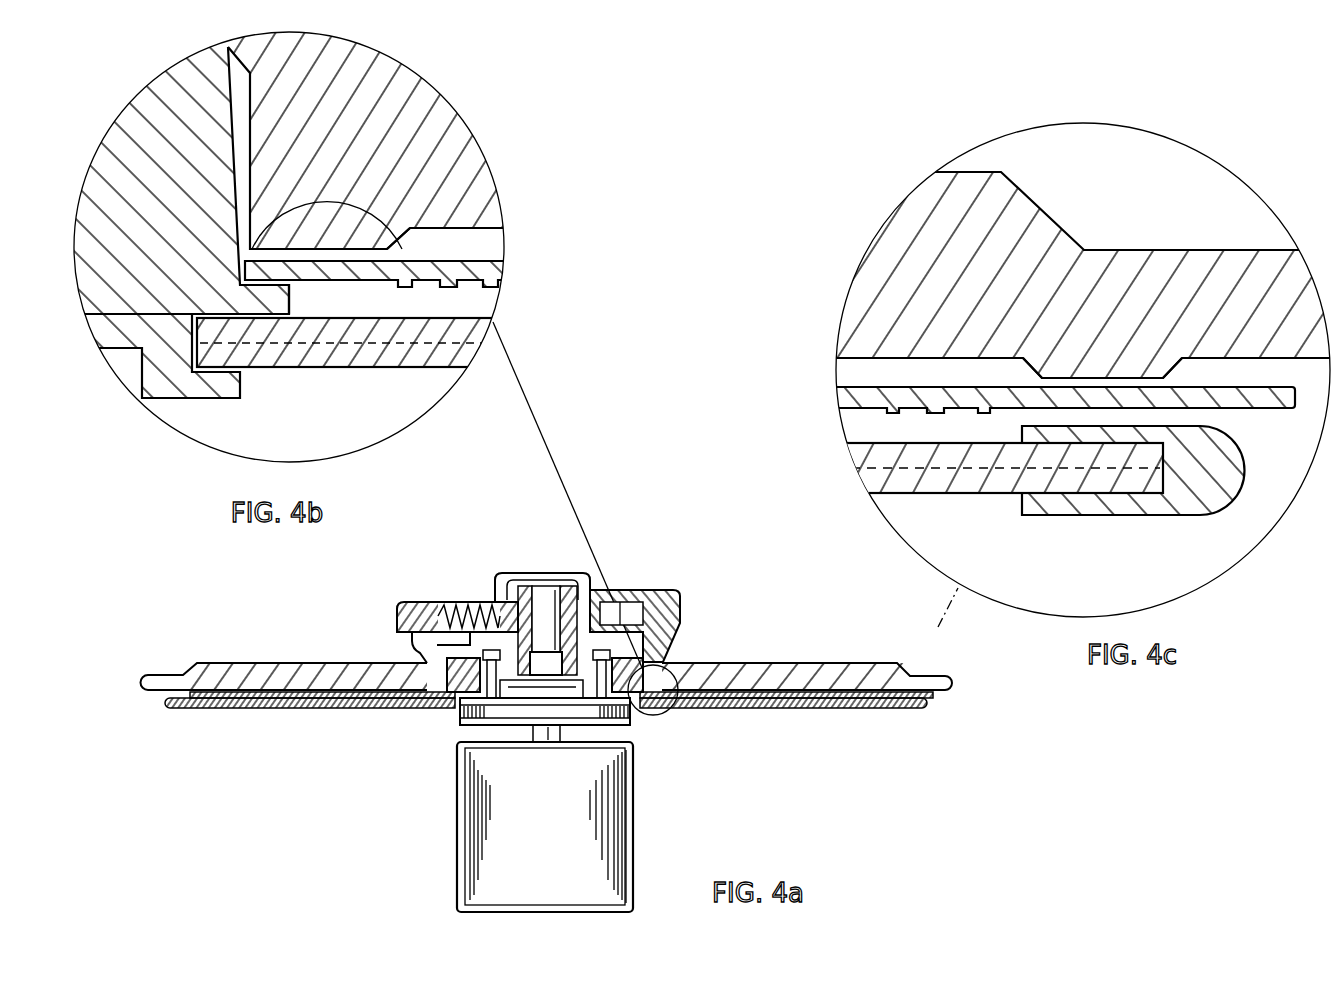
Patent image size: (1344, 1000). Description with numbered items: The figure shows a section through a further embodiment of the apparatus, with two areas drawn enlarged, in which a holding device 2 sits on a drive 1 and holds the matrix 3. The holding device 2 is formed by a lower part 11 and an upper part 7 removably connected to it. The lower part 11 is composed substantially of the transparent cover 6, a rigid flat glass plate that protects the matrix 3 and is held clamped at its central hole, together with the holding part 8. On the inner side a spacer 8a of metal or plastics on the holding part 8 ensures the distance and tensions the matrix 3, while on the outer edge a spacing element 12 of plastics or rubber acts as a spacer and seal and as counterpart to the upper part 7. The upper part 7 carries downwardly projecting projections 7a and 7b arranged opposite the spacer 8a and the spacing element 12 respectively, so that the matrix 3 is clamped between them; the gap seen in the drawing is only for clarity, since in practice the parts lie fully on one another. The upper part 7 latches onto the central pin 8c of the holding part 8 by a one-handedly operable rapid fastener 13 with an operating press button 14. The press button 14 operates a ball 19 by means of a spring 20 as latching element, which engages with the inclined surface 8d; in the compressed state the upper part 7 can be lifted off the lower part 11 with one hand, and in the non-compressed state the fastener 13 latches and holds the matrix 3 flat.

In FIG. 4A, the drive 1 is at (625, 807).
In FIG. 4A, the holding device 2 is at (263, 646).
In FIG. 4B, the matrix 3 is at (479, 236).
In FIG. 4C, the matrix 3 is at (1262, 409).
In FIG. 4A, the matrix 3 is at (815, 692).
In FIG. 4B, the transparent cover 6 is at (390, 368).
In FIG. 4C, the transparent cover 6 is at (944, 492).
In FIG. 4A, the transparent cover 6 is at (805, 708).
In FIG. 4B, the upper part 7 is at (349, 158).
In FIG. 4C, the upper part 7 is at (1066, 250).
In FIG. 4A, the upper part 7 is at (771, 667).
In FIG. 4B, the projection 7a is at (397, 241).
In FIG. 4C, the projection 7b is at (1164, 366).
In FIG. 4B, the holding part 8 is at (157, 212).
In FIG. 4B, the spacer 8a is at (289, 298).
In FIG. 4A, the central pin 8c is at (580, 632).
In FIG. 4A, the inclined surface 8d is at (517, 597).
In FIG. 4B, the lower part 11 is at (102, 400).
In FIG. 4A, the lower part 11 is at (661, 726).
In FIG. 4C, the spacing element 12 is at (1130, 514).
In FIG. 4A, the rapid fastener 13 is at (470, 572).
In FIG. 4A, the press button 14 is at (397, 615).
In FIG. 4A, the ball 19 is at (500, 606).
In FIG. 4A, the spring 20 is at (448, 592).